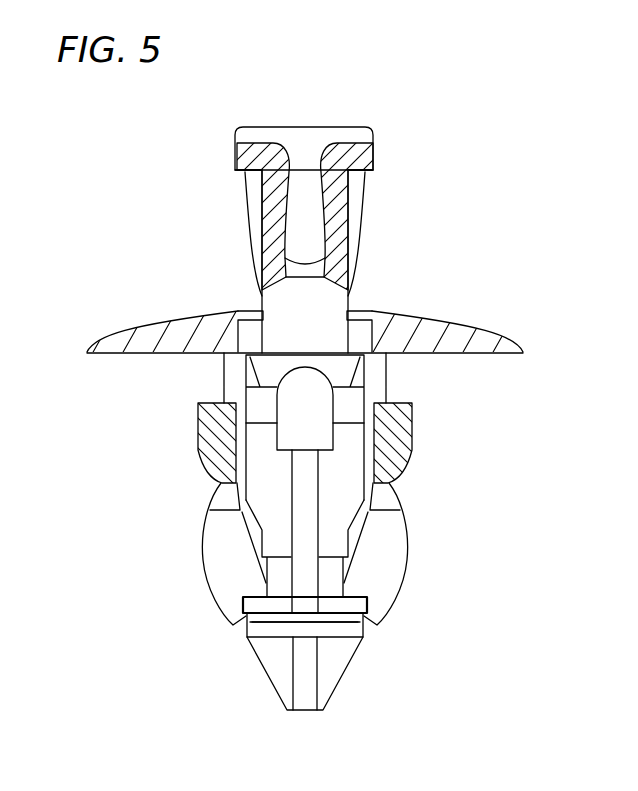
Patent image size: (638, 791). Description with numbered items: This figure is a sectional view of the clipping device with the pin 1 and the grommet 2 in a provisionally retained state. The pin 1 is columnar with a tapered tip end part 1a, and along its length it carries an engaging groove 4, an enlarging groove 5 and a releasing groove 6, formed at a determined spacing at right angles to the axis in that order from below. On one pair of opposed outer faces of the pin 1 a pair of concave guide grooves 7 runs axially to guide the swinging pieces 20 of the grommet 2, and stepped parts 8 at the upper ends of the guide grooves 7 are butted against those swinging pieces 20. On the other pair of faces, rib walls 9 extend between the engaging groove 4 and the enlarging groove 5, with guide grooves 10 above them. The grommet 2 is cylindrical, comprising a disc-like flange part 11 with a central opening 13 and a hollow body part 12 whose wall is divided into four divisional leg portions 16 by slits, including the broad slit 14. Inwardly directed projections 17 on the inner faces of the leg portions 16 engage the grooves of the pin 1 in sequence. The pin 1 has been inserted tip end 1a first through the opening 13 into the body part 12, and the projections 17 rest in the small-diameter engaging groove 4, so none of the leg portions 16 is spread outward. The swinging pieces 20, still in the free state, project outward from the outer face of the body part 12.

The pin 1 is at (396, 118).
The tip end part 1a is at (343, 633).
The grommet 2 is at (522, 454).
The engaging groove 4 is at (277, 582).
The enlarging groove 5 is at (260, 399).
The releasing groove 6 is at (332, 307).
The guide grooves 7 is at (263, 226).
The stepped parts 8 is at (374, 186).
The rib walls 9 is at (307, 493).
The guide grooves 10 is at (297, 192).
The flange part 11 is at (470, 322).
The body part 12 is at (180, 496).
The opening 13 is at (238, 301).
The broad slit 14 is at (232, 548).
The divisional leg portions 16 is at (405, 520).
The inwardly directed projections 17 is at (246, 592).
The swinging pieces 20 is at (205, 418).